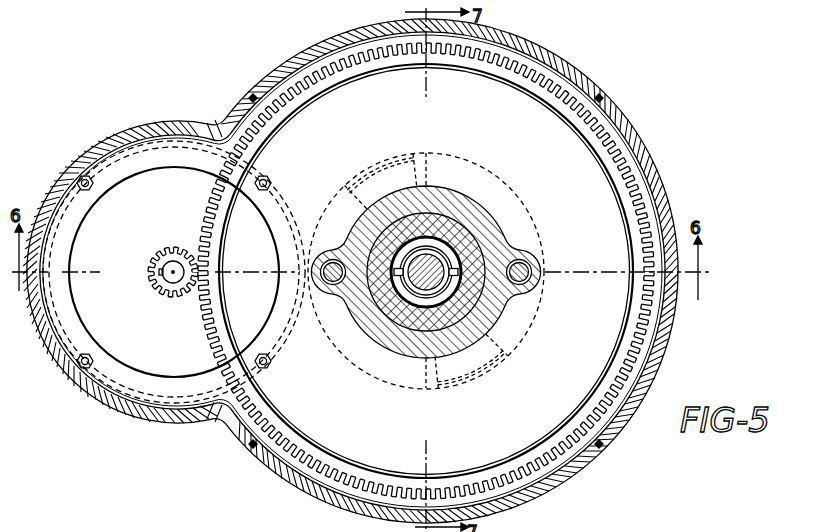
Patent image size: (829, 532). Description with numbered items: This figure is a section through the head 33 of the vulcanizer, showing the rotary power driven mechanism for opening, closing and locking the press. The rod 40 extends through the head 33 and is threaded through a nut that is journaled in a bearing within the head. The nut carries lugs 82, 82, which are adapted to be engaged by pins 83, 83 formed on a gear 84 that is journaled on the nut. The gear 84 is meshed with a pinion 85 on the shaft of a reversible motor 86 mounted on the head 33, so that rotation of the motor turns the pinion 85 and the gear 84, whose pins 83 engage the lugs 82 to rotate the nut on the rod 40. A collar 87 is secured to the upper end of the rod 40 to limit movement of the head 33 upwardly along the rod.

The head 33 is at (664, 365).
The gear 84 is at (554, 88).
The reversible motor 86 is at (143, 355).
The pinion 85 is at (178, 293).
The lugs 82 is at (532, 372).
The pins 83 is at (333, 293).
The collar 87 is at (440, 247).
The rod 40 is at (446, 255).